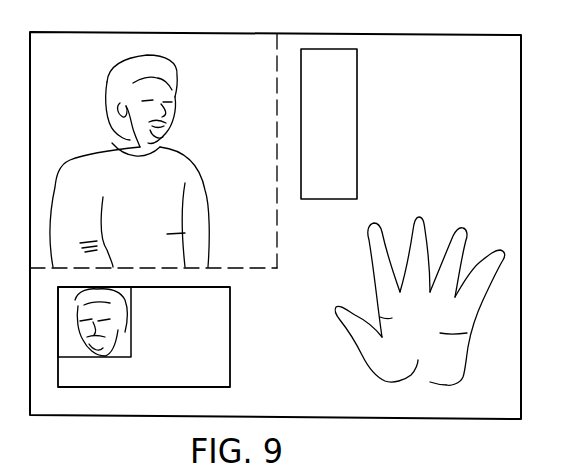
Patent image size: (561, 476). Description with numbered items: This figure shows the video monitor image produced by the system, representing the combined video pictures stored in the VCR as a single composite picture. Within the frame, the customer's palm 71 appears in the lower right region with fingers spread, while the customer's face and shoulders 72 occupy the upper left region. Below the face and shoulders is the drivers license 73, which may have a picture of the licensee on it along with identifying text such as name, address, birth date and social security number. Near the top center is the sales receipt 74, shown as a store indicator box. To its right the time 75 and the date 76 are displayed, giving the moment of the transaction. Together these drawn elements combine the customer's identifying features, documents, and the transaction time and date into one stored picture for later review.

The customer's palm 71 is at (465, 216).
The face and shoulders 72 is at (186, 97).
The drivers license 73 is at (230, 331).
The sales receipt 74 is at (357, 142).
The time 75 is at (498, 52).
The date 76 is at (482, 100).